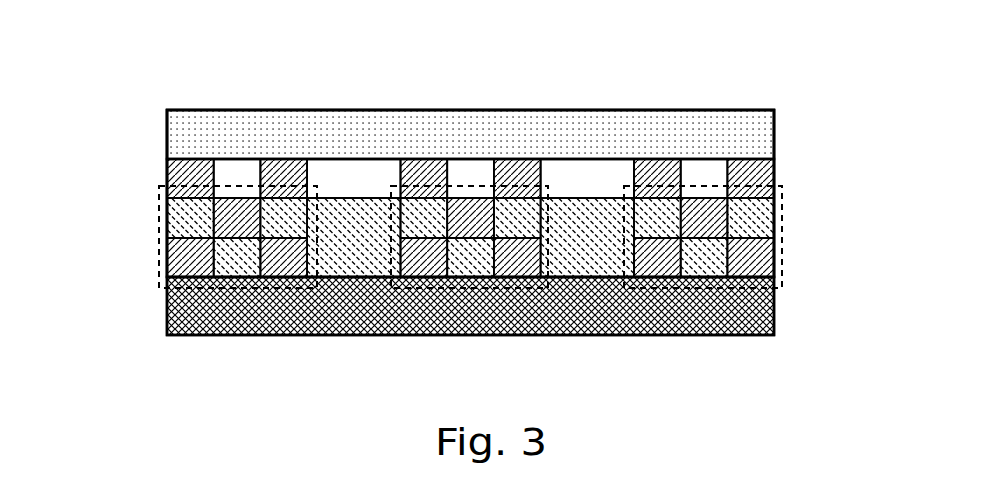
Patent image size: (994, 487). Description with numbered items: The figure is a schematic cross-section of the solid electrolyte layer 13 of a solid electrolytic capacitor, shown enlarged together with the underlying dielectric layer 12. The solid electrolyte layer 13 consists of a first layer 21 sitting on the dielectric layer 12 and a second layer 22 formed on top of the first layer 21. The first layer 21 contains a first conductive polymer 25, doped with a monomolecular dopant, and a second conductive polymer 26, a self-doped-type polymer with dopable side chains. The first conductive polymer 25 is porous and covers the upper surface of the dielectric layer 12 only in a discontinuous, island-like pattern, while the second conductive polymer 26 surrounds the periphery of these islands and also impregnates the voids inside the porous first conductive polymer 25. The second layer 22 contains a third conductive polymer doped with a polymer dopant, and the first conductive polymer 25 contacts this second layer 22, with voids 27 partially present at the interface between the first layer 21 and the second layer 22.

The dielectric layer 12 is at (770, 303).
The solid electrolyte layer 13 is at (863, 107).
The first layer 21 is at (792, 158).
The second layer 22 is at (767, 134).
The first conductive polymer 25 is at (170, 260).
The second conductive polymer 26 is at (170, 219).
The void 27 is at (238, 168).